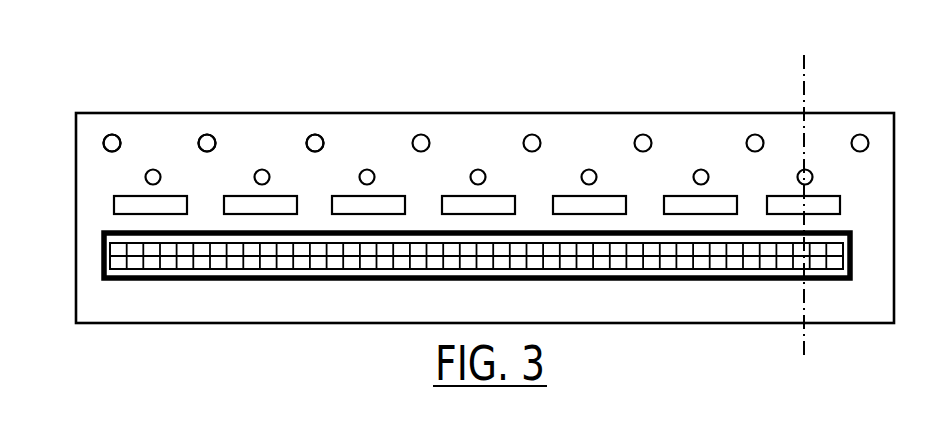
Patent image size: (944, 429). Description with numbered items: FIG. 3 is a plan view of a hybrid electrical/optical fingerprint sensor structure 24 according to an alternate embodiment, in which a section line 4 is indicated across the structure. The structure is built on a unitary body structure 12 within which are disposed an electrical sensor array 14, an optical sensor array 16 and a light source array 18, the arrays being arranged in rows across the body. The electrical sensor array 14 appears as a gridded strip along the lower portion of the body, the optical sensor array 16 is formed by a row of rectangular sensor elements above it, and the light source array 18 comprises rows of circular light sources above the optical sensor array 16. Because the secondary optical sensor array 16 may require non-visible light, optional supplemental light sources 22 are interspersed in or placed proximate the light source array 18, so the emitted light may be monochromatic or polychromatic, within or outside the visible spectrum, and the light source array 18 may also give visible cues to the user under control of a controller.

The unitary body structure 12 is at (325, 305).
The electrical sensor array 14 is at (103, 247).
The optical sensor array 16 is at (63, 195).
The light source array 18 is at (63, 132).
The supplemental light sources 22 is at (115, 134).
The panel assembly 24 is at (114, 74).
The section line of FIG. 4 is at (804, 55).